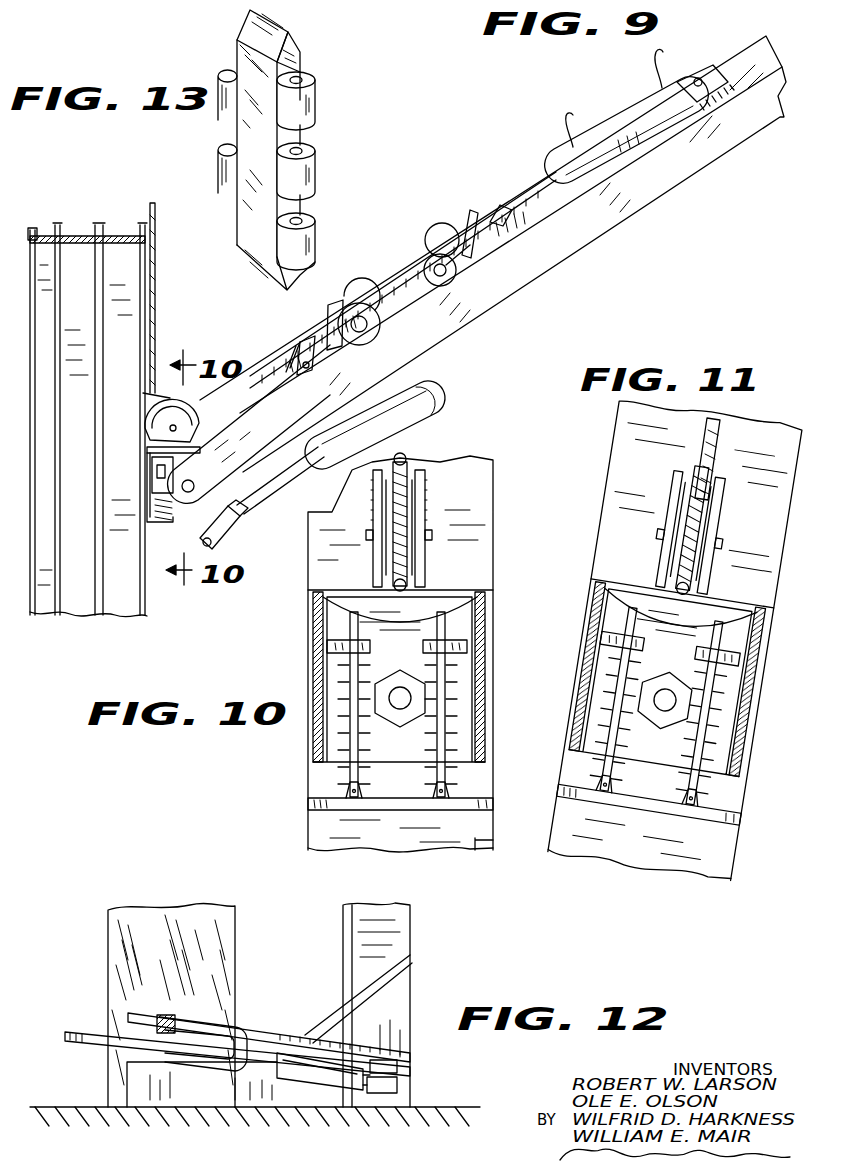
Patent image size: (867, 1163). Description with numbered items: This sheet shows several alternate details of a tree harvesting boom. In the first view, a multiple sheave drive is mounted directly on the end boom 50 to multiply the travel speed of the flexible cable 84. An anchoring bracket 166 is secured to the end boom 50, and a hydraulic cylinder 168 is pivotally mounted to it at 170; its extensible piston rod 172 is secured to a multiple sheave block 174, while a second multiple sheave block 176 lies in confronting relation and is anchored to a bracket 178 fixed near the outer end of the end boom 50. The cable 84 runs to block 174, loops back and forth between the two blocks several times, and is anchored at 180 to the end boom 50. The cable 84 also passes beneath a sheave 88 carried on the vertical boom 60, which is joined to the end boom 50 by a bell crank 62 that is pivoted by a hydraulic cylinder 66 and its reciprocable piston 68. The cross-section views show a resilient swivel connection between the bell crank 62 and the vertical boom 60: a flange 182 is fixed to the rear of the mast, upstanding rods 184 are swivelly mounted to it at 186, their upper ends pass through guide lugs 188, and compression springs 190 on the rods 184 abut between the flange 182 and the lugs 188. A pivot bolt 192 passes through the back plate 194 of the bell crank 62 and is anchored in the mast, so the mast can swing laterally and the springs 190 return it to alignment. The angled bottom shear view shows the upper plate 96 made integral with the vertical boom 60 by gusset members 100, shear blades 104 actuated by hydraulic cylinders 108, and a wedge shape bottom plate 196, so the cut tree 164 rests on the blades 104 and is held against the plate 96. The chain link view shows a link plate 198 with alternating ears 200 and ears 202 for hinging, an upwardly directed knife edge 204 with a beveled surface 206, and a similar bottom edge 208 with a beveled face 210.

In FIG. 9, the end boom 50 is at (678, 178).
In FIG. 9, the vertical boom 60 is at (129, 598).
In FIG. 10, the vertical boom 60 is at (327, 828).
In FIG. 11, the vertical boom 60 is at (773, 440).
In FIG. 12, the vertical boom 60 is at (392, 941).
In FIG. 9, the bell crank 62 is at (205, 466).
In FIG. 10, the bell crank 62 is at (487, 690).
In FIG. 11, the bell crank 62 is at (753, 678).
In FIG. 9, the hydraulic cylinder 66 is at (434, 404).
In FIG. 9, the reciprocable piston 68 is at (287, 502).
In FIG. 9, the flexible cable 84 is at (153, 347).
In FIG. 11, the flexible cable 84 is at (708, 440).
In FIG. 9, the sheave 88 is at (152, 422).
In FIG. 10, the sheave 88 is at (402, 514).
In FIG. 11, the sheave 88 is at (713, 509).
In FIG. 12, the upper plate 96 is at (267, 1034).
In FIG. 12, the gusset members 100 is at (400, 997).
In FIG. 12, the shear blades 104 is at (80, 1030).
In FIG. 12, the hydraulic cylinders 108 is at (343, 1082).
In FIG. 12, the cut tree 164 is at (190, 913).
In FIG. 9, the anchoring bracket 166 is at (735, 80).
In FIG. 9, the hydraulic cylinder 168 is at (638, 100).
In FIG. 9, the pivot mounting 170 is at (701, 67).
In FIG. 9, the extensible piston rod 172 is at (542, 178).
In FIG. 9, the multiple sheave block 174 is at (440, 230).
In FIG. 9, the second multiple sheave block 176 is at (350, 300).
In FIG. 9, the bracket 178 is at (290, 368).
In FIG. 9, the cable anchor 180 is at (326, 377).
In FIG. 10, the flange 182 is at (317, 798).
In FIG. 11, the flange 182 is at (727, 835).
In FIG. 10, the upstanding rods 184 is at (446, 622).
In FIG. 11, the upstanding rods 184 is at (728, 789).
In FIG. 10, the swivel mounting 186 is at (440, 798).
In FIG. 11, the swivel mounting 186 is at (693, 812).
In FIG. 10, the guide lugs 188 is at (328, 648).
In FIG. 11, the guide lugs 188 is at (736, 652).
In FIG. 10, the compression springs 190 is at (458, 717).
In FIG. 11, the compression springs 190 is at (658, 726).
In FIG. 10, the pivot bolt 192 is at (410, 683).
In FIG. 11, the pivot bolt 192 is at (668, 681).
In FIG. 10, the back plate 194 is at (410, 626).
In FIG. 11, the back plate 194 is at (648, 618).
In FIG. 12, the wedge shape bottom plate 196 is at (205, 1093).
In FIG. 13, the link plate 198 is at (248, 216).
In FIG. 13, the ears 200 is at (315, 160).
In FIG. 13, the ears 202 is at (222, 160).
In FIG. 13, the knife edge 204 is at (268, 23).
In FIG. 13, the beveled surface 206 is at (298, 48).
In FIG. 13, the bottom edge 208 is at (270, 278).
In FIG. 13, the beveled face 210 is at (310, 270).